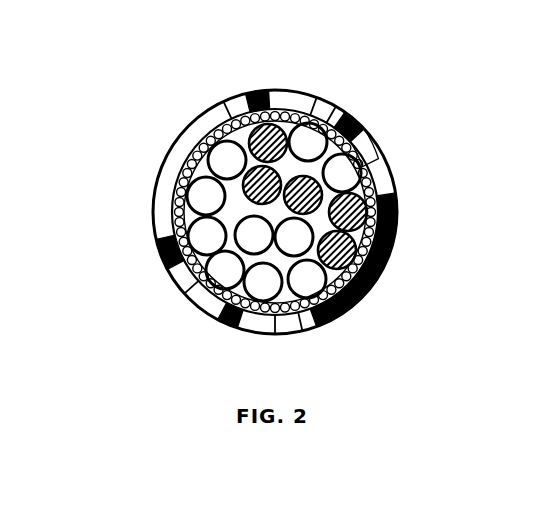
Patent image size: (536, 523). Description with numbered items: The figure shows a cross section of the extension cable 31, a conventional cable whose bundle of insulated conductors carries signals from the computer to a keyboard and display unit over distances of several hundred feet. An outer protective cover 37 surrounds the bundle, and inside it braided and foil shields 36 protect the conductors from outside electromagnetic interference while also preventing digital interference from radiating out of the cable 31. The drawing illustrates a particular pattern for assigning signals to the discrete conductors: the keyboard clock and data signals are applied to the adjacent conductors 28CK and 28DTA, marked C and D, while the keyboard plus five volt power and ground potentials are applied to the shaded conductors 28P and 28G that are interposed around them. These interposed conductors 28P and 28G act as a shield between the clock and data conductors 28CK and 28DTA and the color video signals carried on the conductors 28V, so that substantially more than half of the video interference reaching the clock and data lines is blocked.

The cable 31 is at (335, 91).
The protective cover 37 is at (368, 278).
The keyboard clock conductor 28CK is at (338, 108).
The keyboard data conductor 28DTA is at (370, 139).
The ground conductor 28G is at (250, 117).
The braided and foil shields 36 is at (370, 200).
The power conductor 28P is at (372, 272).
The video conductor 28V is at (172, 196).